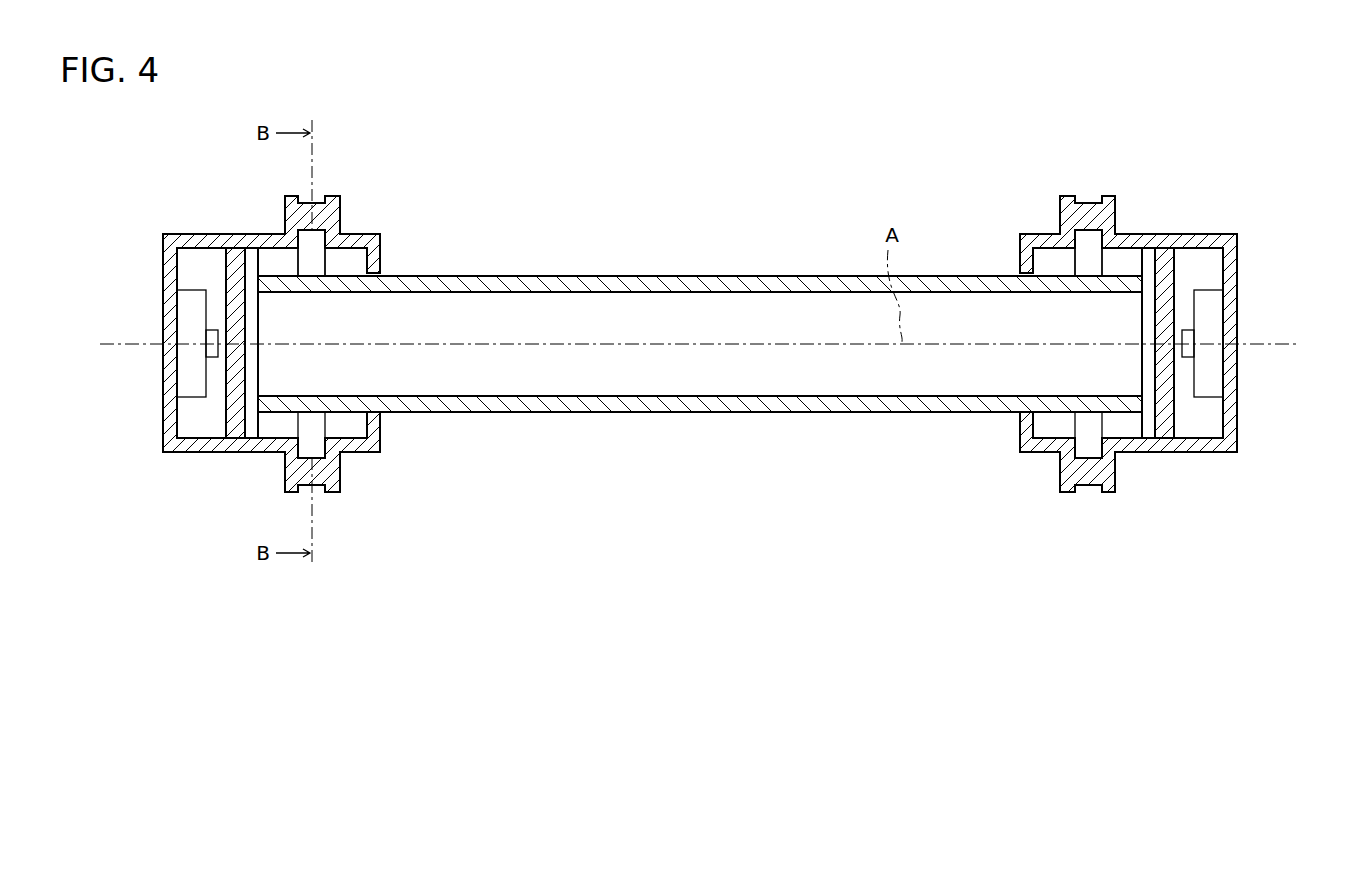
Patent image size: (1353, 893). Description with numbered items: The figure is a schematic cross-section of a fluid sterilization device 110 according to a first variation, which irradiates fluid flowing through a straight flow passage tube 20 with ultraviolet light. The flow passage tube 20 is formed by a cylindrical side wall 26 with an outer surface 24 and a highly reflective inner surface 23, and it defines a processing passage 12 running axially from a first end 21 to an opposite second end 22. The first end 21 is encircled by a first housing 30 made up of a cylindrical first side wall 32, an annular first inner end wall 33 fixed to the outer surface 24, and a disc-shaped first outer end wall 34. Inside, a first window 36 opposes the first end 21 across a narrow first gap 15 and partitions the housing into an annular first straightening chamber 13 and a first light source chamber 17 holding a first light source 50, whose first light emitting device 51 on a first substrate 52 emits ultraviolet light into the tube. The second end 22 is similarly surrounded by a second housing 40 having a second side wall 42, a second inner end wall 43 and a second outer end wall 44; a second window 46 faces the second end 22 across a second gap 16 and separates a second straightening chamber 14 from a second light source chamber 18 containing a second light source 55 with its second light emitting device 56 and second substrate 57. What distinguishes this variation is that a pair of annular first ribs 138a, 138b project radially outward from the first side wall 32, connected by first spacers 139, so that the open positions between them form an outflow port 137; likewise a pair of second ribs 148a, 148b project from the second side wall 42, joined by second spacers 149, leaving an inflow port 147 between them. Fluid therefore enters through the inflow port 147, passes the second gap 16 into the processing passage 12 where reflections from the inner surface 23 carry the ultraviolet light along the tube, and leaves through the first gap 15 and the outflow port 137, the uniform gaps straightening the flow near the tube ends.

The fluid sterilization device 110 is at (712, 581).
The flow passage tube 20 is at (774, 267).
The side wall 26 is at (585, 284).
The outer surface 24 is at (507, 412).
The inner surface 23 is at (560, 393).
The processing passage 12 is at (840, 385).
The first housing 30 is at (199, 224).
The first side wall 32 is at (228, 236).
The first outer end wall 34 is at (170, 372).
The first light source chamber 17 is at (192, 424).
The first window 36 is at (232, 430).
The first end 21 is at (272, 410).
The first gap 15 is at (257, 250).
The first rib 138b is at (290, 197).
The first rib 138a is at (330, 197).
The first spacer 139 is at (318, 205).
The outflow port 137 is at (312, 260).
The first straightening chamber 13 is at (352, 262).
The first inner end wall 33 is at (375, 428).
The first light source 50 is at (144, 331).
The first substrate 52 is at (192, 310).
The first light emitting device 51 is at (205, 340).
The second housing 40 is at (1213, 225).
The second side wall 42 is at (1177, 236).
The second outer end wall 44 is at (1230, 372).
The second light source chamber 18 is at (1208, 424).
The second window 46 is at (1165, 430).
The second end 22 is at (1128, 410).
The second gap 16 is at (1151, 251).
The second rib 148a is at (1068, 197).
The second rib 148b is at (1107, 197).
The second spacer 149 is at (1085, 205).
The inflow port 147 is at (1052, 265).
The second straightening chamber 14 is at (1027, 262).
The second inner end wall 43 is at (1025, 428).
The second light source 55 is at (1255, 331).
The second substrate 57 is at (1207, 302).
The second light emitting device 56 is at (1190, 338).